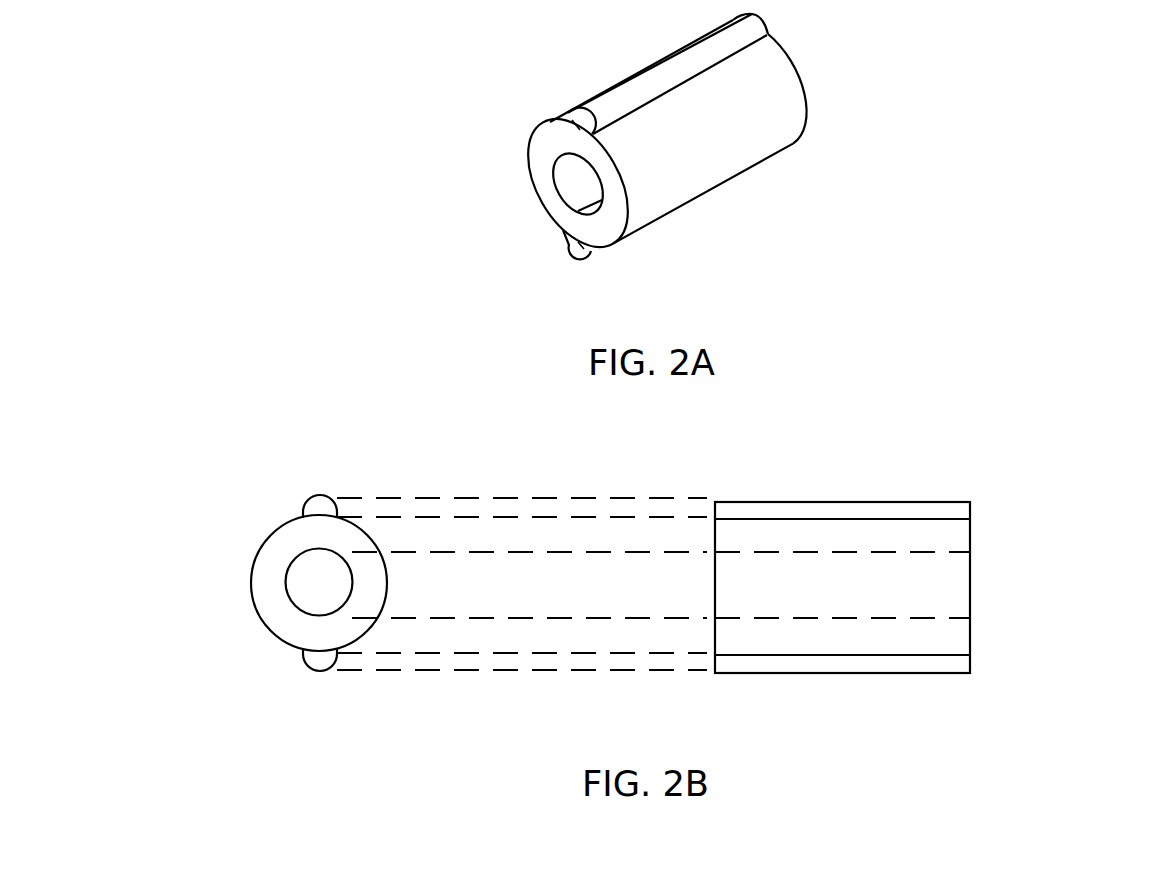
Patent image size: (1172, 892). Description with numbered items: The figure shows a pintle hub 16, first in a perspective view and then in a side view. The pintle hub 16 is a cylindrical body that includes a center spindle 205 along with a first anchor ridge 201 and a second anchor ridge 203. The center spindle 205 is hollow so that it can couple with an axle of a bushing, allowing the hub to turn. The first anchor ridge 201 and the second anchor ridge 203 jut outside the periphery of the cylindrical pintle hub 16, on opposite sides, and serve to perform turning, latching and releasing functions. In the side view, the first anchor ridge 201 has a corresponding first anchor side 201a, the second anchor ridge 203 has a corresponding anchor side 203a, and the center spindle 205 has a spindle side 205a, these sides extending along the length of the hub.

In FIG. 2A, the pintle hub 16 is at (757, 118).
In FIG. 2A, the first anchor ridge 201 is at (580, 128).
In FIG. 2B, the first anchor ridge 201 is at (320, 512).
In FIG. 2A, the second anchor ridge 203 is at (590, 250).
In FIG. 2B, the second anchor ridge 203 is at (318, 652).
In FIG. 2A, the center spindle 205 is at (578, 185).
In FIG. 2B, the center spindle 205 is at (318, 582).
In FIG. 2B, the first anchor side 201a is at (813, 510).
In FIG. 2B, the anchor side 203a is at (820, 667).
In FIG. 2B, the spindle side 205a is at (950, 595).